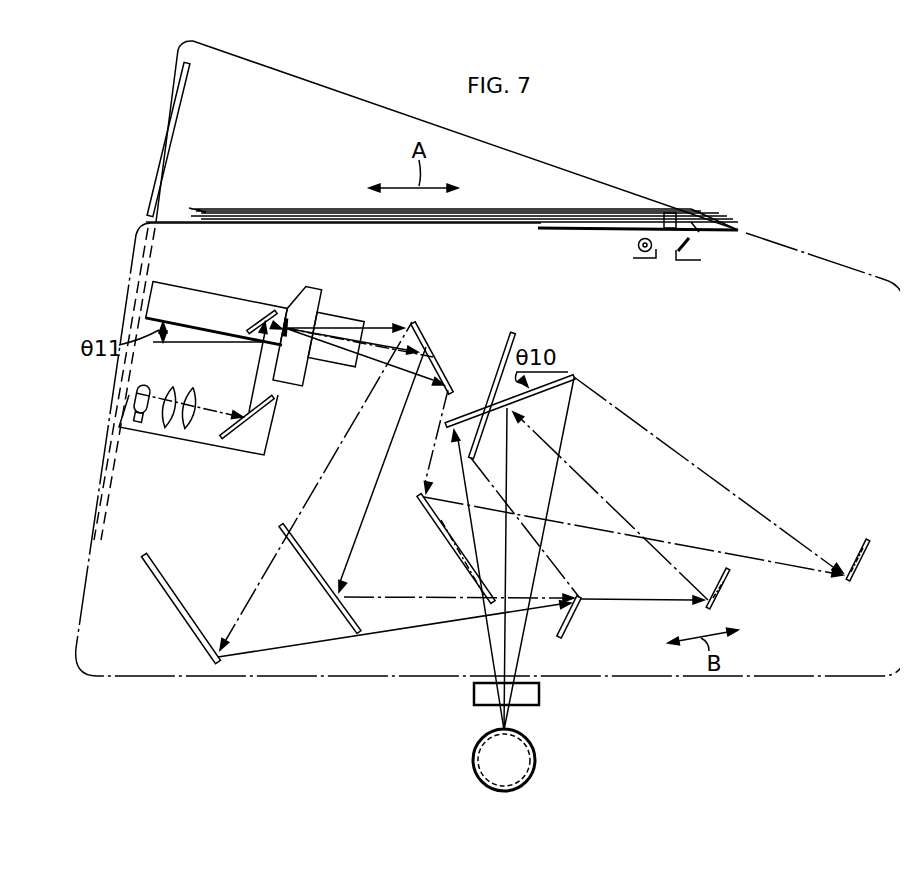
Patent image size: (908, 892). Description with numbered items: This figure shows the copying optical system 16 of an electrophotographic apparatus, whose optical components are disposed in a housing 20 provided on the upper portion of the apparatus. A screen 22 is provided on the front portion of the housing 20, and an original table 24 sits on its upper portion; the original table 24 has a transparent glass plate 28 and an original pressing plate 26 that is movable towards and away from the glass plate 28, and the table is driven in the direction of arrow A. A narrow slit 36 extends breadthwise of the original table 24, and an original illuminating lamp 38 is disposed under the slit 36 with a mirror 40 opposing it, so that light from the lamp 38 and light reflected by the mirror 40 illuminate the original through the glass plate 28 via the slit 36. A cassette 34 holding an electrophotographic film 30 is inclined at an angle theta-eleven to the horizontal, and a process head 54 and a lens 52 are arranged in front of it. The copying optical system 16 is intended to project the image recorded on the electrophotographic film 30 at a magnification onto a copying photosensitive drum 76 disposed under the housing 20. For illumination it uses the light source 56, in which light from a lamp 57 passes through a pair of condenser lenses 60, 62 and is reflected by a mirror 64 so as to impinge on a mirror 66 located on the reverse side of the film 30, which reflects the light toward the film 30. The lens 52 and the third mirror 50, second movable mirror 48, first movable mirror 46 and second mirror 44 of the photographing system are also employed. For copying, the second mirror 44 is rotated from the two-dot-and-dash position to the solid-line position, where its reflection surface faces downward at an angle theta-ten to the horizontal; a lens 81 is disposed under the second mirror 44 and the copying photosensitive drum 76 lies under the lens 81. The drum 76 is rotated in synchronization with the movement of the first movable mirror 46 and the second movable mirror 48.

The copying optical system 16 is at (693, 428).
The housing 20 is at (847, 270).
The screen 22 is at (146, 212).
The original table 24 is at (528, 211).
The original pressing plate 26 is at (345, 211).
The transparent glass plate 28 is at (330, 219).
The electrophotographic film 30 is at (312, 291).
The cassette 34 is at (203, 290).
The narrow slit 36 is at (669, 214).
The original illuminating lamp 38 is at (636, 245).
The mirror 40 is at (700, 246).
The second mirror 44 is at (566, 372).
The first movable mirror 46 is at (575, 622).
The second movable mirror 48 is at (182, 620).
The third mirror 50 is at (428, 336).
The lens 52 is at (332, 362).
The process head 54 is at (298, 392).
The light source 56 is at (168, 447).
The lamp 57 is at (118, 428).
The condenser lens 60 is at (176, 390).
The condenser lens 62 is at (200, 392).
The mirror 64 is at (235, 435).
The mirror 66 is at (259, 314).
The copying photosensitive drum 76 is at (527, 760).
The lens 81 is at (540, 694).